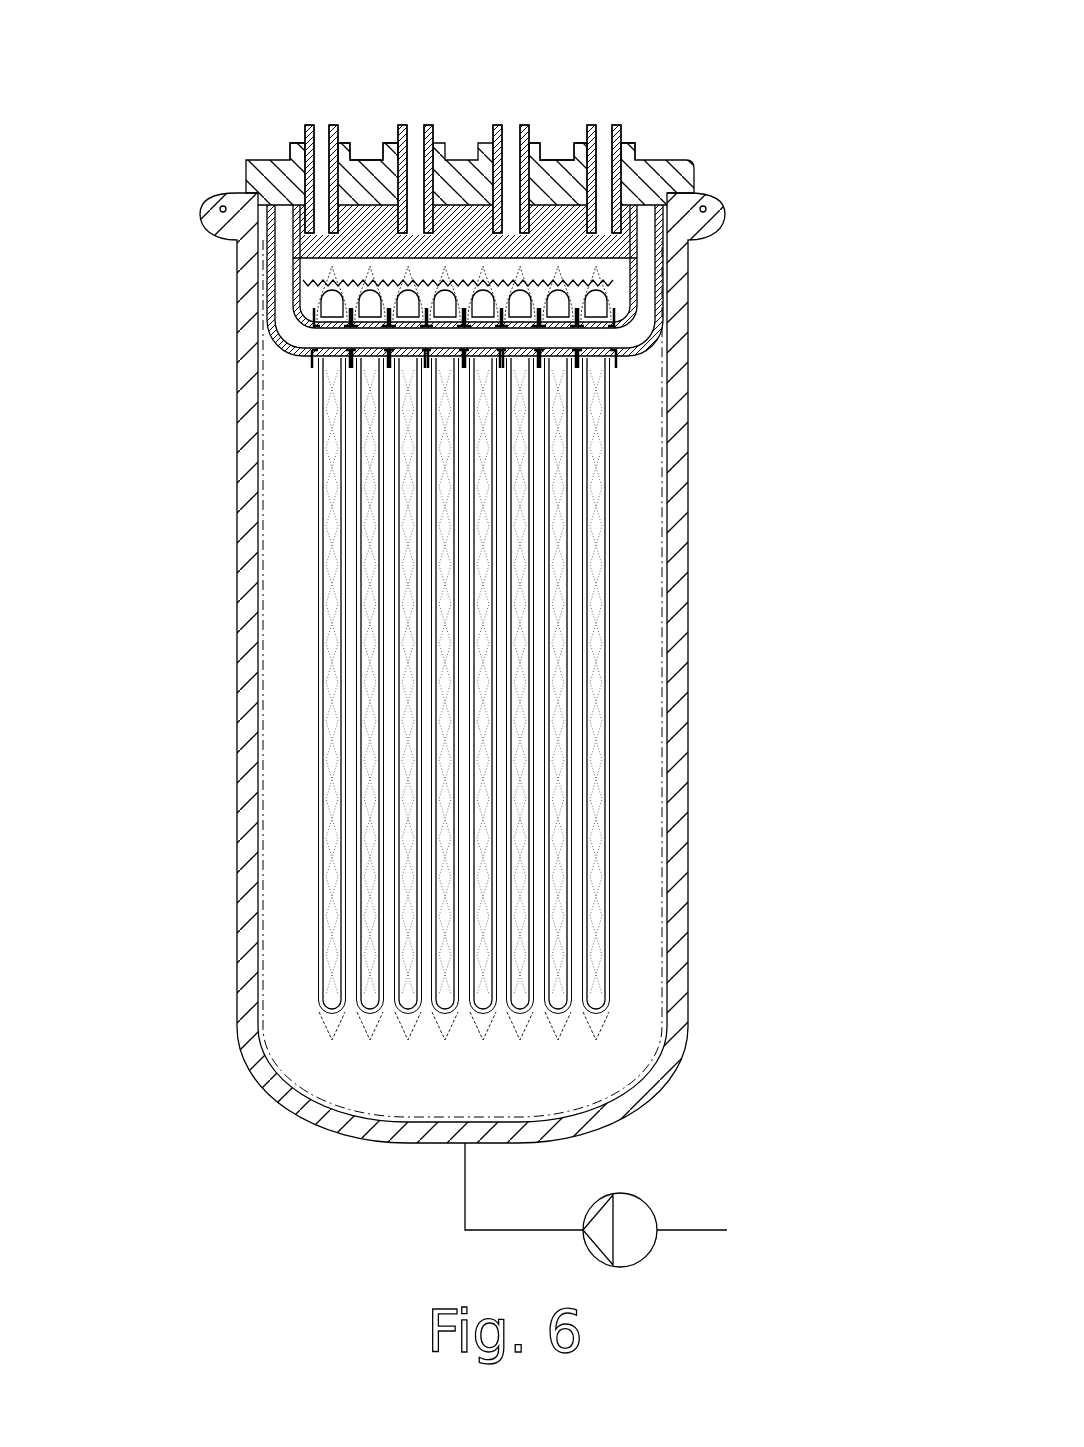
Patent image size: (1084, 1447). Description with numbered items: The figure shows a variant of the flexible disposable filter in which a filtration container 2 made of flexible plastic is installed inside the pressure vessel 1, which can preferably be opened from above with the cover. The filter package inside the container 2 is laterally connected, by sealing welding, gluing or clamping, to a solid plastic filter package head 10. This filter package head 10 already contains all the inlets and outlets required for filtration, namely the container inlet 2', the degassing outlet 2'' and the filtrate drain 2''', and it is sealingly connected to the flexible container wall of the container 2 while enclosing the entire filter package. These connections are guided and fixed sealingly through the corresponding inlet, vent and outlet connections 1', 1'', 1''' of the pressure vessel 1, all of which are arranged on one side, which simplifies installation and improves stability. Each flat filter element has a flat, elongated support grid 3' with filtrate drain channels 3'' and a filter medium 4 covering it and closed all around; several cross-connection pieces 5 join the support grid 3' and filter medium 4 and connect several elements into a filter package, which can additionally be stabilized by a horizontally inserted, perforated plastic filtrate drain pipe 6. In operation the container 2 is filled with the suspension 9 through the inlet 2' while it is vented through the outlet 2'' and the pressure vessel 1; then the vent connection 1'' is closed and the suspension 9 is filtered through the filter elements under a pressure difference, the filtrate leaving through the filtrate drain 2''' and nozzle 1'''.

The pressure vessel 1 is at (378, 233).
The inlet connection 1' is at (368, 89).
The vent connection 1'' is at (572, 89).
The filtrate drain nozzle 1''' is at (489, 89).
The container 2 is at (562, 668).
The container inlet 2' is at (426, 116).
The degassing outlet 2'' is at (522, 116).
The filtrate drain 2''' is at (494, 116).
The support grid 3' is at (233, 686).
The filtrate drain channels 3'' is at (251, 686).
The filter medium 4 is at (320, 1024).
The cross-connection pieces 5 is at (587, 362).
The filtrate drain pipe 6 is at (488, 337).
The suspension 9 is at (493, 1079).
The filter package head 10 is at (705, 207).